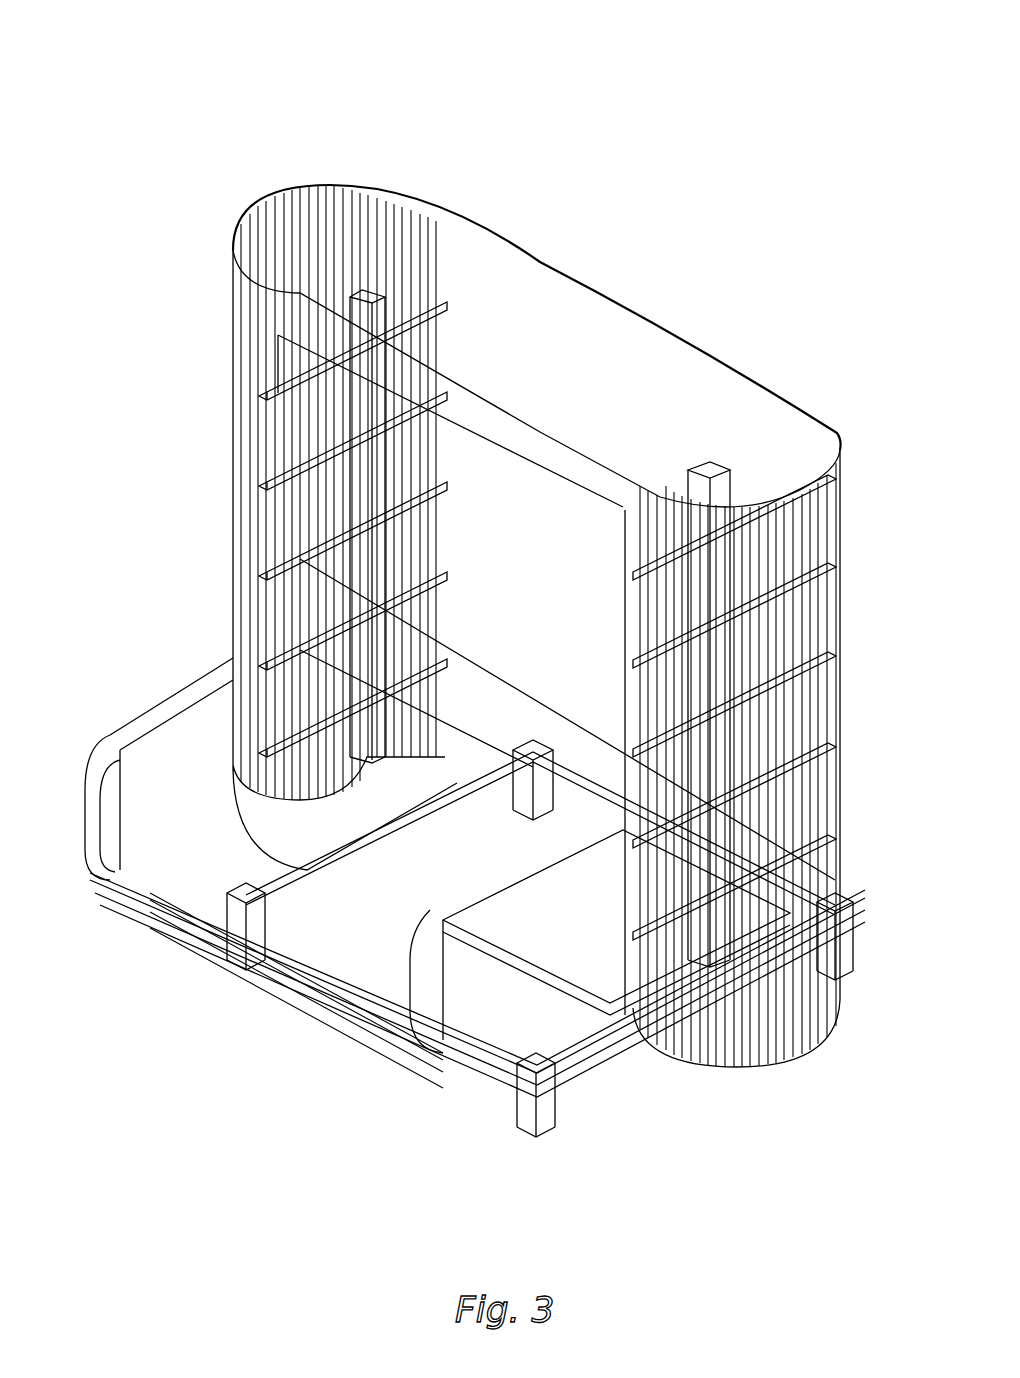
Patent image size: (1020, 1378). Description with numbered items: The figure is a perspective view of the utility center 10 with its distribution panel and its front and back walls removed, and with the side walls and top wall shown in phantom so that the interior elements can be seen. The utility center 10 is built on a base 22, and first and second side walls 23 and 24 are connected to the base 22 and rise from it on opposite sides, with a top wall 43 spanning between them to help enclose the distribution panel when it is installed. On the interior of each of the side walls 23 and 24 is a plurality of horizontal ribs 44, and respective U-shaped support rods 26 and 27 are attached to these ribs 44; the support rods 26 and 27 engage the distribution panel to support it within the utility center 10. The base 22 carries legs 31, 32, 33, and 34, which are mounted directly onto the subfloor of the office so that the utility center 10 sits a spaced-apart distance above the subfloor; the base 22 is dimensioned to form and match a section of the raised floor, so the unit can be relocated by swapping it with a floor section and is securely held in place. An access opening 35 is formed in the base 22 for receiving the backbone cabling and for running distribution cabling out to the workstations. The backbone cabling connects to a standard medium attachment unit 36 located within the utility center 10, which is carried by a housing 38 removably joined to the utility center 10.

The utility center 10 is at (205, 110).
The base 22 is at (610, 1050).
The first side wall 23 is at (233, 515).
The second side wall 24 is at (845, 665).
The U-shaped support rod 26 is at (360, 300).
The U-shaped support rod 27 is at (712, 466).
The leg 31 is at (232, 945).
The leg 32 is at (520, 1105).
The leg 33 is at (850, 975).
The leg 34 is at (540, 760).
The access opening 35 is at (586, 908).
The medium attachment unit 36 is at (490, 685).
The housing 38 is at (88, 835).
The top wall 43 is at (603, 345).
The horizontal ribs 44 is at (447, 308).